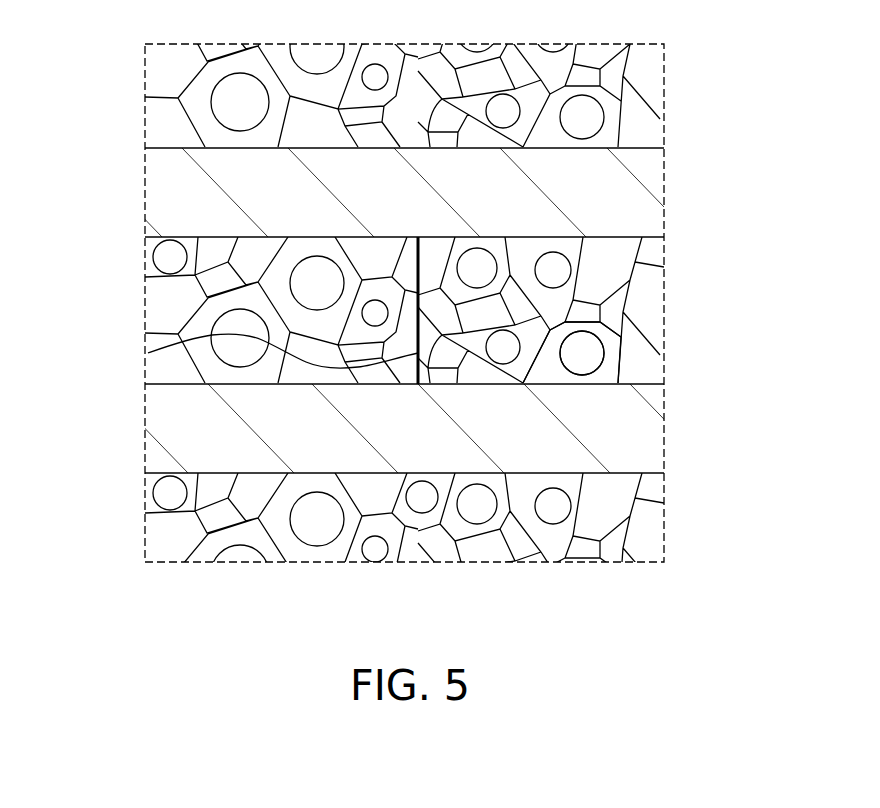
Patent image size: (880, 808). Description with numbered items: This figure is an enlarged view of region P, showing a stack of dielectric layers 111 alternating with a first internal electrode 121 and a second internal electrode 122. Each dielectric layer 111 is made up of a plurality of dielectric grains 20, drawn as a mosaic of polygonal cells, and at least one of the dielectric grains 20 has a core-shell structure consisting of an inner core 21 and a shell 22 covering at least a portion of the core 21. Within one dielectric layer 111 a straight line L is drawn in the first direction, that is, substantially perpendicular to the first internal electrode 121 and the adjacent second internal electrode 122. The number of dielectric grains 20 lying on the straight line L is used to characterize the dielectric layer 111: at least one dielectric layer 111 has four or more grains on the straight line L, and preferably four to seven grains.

The dielectric layer 111 is at (160, 316).
The first internal electrode 121 is at (160, 428).
The second internal electrode 122 is at (160, 190).
The straight line L is at (148, 353).
The dielectric grain 20 is at (647, 352).
The core 21 is at (597, 352).
The shell 22 is at (612, 368).
The region P is at (421, 610).